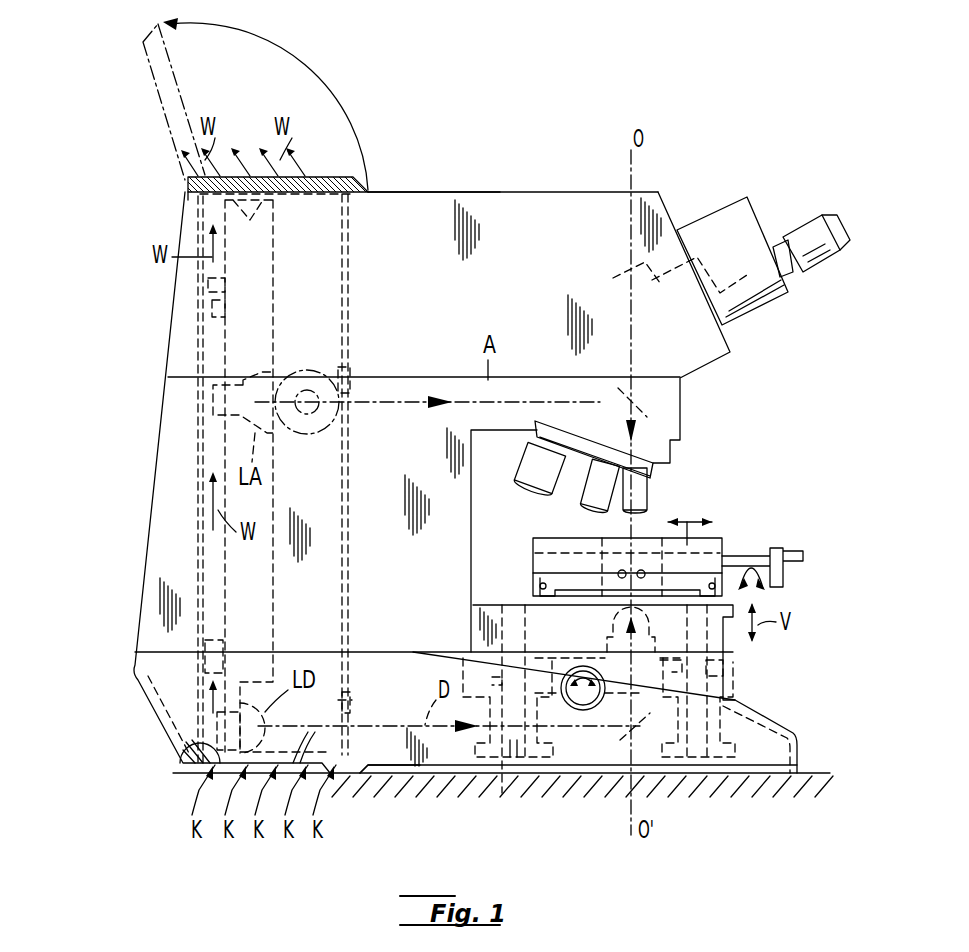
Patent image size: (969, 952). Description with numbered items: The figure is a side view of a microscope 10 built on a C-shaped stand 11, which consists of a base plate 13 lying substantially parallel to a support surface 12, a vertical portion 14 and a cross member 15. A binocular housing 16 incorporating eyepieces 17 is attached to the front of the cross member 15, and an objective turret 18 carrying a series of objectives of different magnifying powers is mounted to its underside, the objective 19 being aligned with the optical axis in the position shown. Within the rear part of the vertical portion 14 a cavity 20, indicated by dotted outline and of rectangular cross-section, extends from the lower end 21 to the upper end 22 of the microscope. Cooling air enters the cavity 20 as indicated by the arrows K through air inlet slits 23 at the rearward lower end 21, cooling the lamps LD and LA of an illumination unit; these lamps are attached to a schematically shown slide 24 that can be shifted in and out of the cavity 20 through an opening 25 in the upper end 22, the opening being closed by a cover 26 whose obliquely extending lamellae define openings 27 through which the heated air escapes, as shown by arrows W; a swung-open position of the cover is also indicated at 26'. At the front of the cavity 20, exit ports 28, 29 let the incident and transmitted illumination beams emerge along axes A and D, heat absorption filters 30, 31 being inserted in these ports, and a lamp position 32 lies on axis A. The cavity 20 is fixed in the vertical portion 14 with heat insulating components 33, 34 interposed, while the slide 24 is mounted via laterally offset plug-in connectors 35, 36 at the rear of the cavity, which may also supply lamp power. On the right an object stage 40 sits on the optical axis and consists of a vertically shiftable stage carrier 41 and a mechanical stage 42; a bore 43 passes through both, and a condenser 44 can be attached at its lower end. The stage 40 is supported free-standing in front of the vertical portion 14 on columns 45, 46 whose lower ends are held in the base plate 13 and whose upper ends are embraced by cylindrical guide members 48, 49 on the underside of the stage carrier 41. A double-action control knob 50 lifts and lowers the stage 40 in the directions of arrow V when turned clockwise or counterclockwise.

The microscope 10 is at (698, 425).
The C-shaped stand 11 is at (472, 544).
The support surface 12 is at (800, 775).
The base plate 13 is at (760, 737).
The vertical portion 14 is at (416, 580).
The cross member 15 is at (523, 297).
The binocular housing 16 is at (742, 218).
The eyepieces 17 is at (826, 258).
The objective turret 18 is at (650, 470).
The objective 19 is at (650, 492).
The cavity 20 is at (349, 292).
The lower end 21 is at (385, 775).
The upper end 22 is at (410, 192).
The air inlet slits 23 is at (312, 730).
The slide 24 is at (255, 320).
The opening 25 is at (326, 194).
The cover 26 is at (265, 105).
The cover in open position 26' is at (192, 102).
The openings 27 is at (262, 479).
The exit port 28 is at (350, 428).
The exit port 29 is at (352, 720).
The heat absorption filter 30 is at (350, 395).
The heat absorption filter 31 is at (352, 698).
The lamp 32 is at (300, 372).
The heat insulating component 33 is at (190, 206).
The heat insulating component 34 is at (183, 755).
The plug-in connector 35 is at (229, 298).
The plug-in connector 36 is at (226, 656).
The object stage 40 is at (766, 601).
The stage carrier 41 is at (722, 645).
The mechanical stage 42 is at (722, 541).
The bore 43 is at (600, 612).
The condenser 44 is at (667, 675).
The column 45 is at (513, 762).
The column 46 is at (697, 757).
The cylindrical guide member 48 is at (548, 700).
The cylindrical guide member 49 is at (712, 670).
The double-action control knob 50 is at (585, 710).